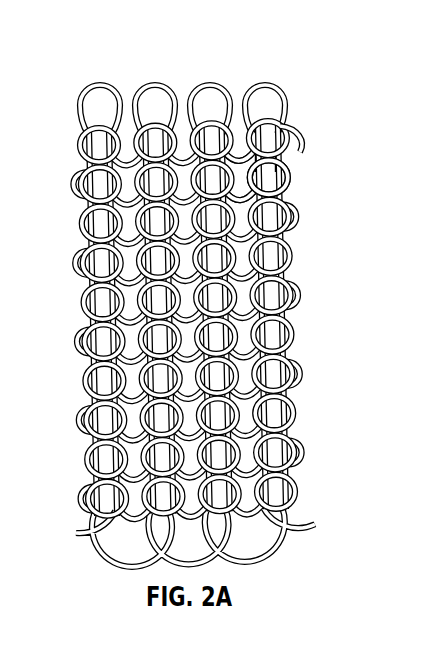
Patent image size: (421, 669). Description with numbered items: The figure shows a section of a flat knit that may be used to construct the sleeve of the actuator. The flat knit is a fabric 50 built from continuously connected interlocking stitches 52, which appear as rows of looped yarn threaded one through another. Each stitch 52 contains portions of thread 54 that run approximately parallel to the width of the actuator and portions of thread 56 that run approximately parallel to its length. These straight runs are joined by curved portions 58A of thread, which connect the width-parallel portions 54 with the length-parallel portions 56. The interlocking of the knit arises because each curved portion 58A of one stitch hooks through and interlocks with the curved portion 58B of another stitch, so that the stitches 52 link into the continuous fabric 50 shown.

The fabric 50 is at (128, 64).
The stitch 52 is at (243, 160).
The portion of thread parallel to the width 54 is at (246, 192).
The portion of thread parallel to the length 56 is at (285, 138).
The curved portion of thread 58A is at (260, 178).
The curved portion of another stitch 58B is at (264, 159).